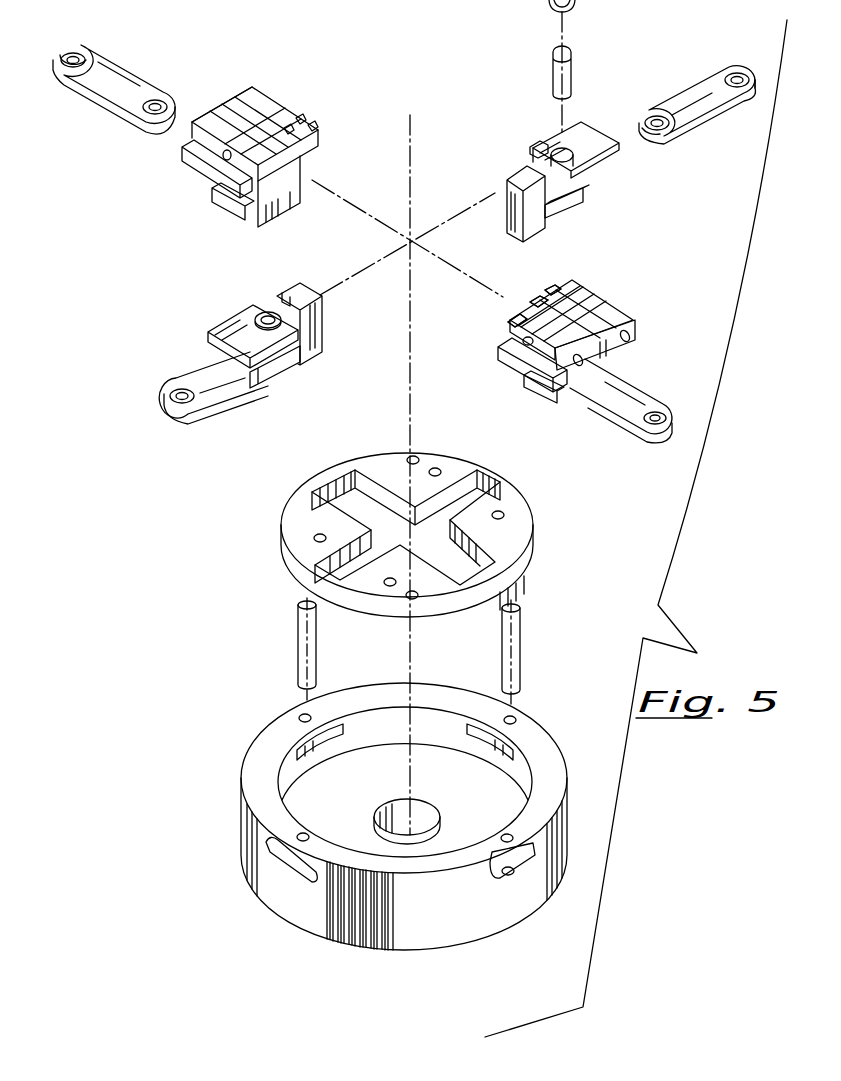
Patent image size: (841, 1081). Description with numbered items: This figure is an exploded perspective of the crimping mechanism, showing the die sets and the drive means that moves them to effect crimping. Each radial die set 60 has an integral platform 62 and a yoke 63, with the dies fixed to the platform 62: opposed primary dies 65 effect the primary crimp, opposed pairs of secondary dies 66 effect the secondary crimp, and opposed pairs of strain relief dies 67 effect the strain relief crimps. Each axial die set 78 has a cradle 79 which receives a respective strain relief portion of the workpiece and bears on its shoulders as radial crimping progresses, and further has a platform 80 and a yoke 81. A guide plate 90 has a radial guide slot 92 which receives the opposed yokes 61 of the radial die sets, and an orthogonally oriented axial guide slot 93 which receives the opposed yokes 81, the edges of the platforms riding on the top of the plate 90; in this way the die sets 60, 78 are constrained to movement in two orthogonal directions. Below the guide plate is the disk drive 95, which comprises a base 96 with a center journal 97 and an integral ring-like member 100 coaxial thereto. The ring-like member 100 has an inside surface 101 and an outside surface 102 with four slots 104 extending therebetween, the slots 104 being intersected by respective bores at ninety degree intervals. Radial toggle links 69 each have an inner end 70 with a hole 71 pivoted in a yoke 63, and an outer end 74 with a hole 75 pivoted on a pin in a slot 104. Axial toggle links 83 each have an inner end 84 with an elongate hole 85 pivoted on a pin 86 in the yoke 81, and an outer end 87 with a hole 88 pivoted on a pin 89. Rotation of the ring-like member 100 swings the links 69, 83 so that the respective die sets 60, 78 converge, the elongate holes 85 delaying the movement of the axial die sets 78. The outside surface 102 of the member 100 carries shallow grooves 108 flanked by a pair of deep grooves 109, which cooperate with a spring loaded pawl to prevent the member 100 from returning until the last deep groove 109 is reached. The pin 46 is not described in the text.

The pin 46 is at (296, 635).
The radial die set 60 is at (284, 82).
The yoke 61 is at (280, 213).
The platform 62 is at (197, 163).
The yoke 63 is at (227, 192).
The primary dies 65 is at (530, 305).
The secondary dies 66 is at (547, 290).
The strain relief dies 67 is at (577, 287).
The radial toggle link 69 is at (117, 67).
The inner end 70 is at (177, 117).
The hole 71 is at (157, 97).
The outer end 74 is at (70, 52).
The hole 75 is at (85, 54).
The axial die set 78 is at (548, 137).
The cradle 79 is at (278, 290).
The platform 80 is at (605, 167).
The yoke 81 is at (573, 198).
The axial toggle link 83 is at (710, 128).
The inner end 84 is at (657, 153).
The elongate hole 85 is at (657, 115).
The pin 86 is at (577, 67).
The outer end 87 is at (748, 88).
The hole 88 is at (737, 77).
The pin 89 is at (520, 640).
The guide plate 90 is at (533, 520).
The radial guide slot 92 is at (373, 490).
The axial guide slot 93 is at (432, 510).
The disk drive 95 is at (406, 823).
The base 96 is at (383, 765).
The center journal 97 is at (430, 817).
The ring-like member 100 is at (440, 690).
The inside surface 101 is at (447, 735).
The outside surface 102 is at (535, 905).
The slots 104 is at (287, 873).
The shallow grooves 108 is at (358, 940).
The deep grooves 109 is at (335, 900).